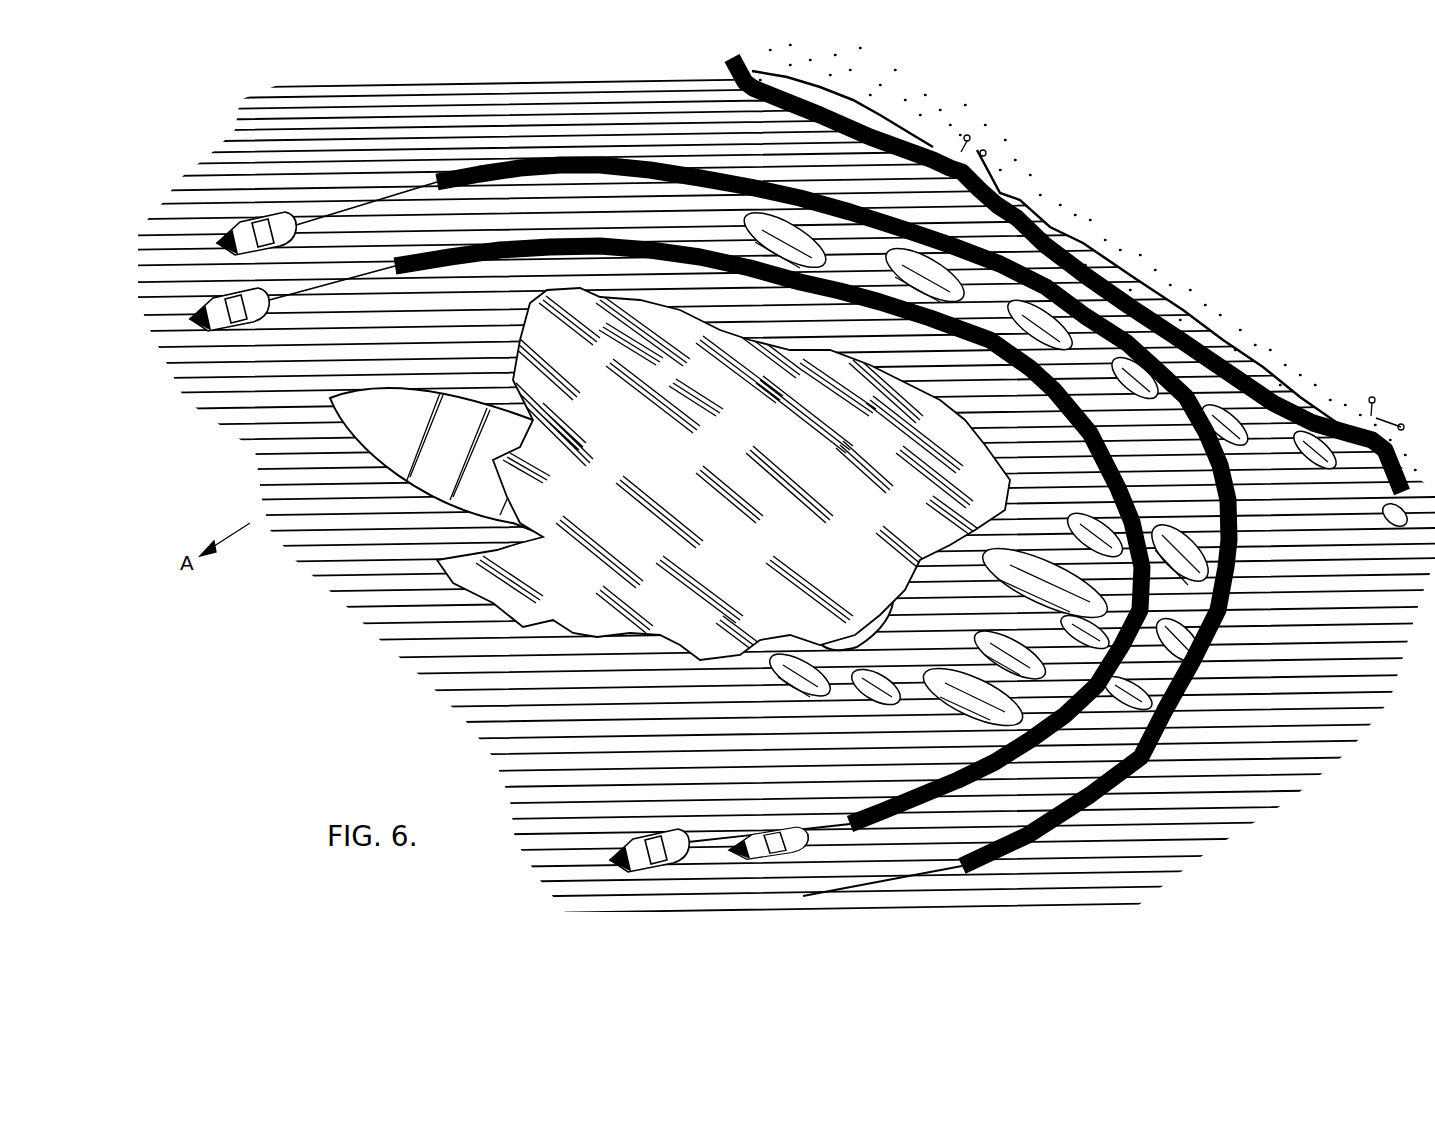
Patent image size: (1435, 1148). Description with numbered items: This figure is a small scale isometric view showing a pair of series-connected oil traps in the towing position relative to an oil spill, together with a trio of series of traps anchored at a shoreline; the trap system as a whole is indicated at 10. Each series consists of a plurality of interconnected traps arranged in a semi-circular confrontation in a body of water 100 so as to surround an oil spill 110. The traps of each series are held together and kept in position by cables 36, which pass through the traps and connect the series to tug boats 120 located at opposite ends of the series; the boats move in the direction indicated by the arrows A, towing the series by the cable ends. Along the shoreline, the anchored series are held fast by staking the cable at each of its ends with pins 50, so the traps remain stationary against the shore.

The oil boom system 10 is at (1212, 316).
The cable 36 is at (1376, 418).
The pin 50 is at (985, 150).
The body of water 100 is at (1290, 772).
The oil spill 110 is at (831, 437).
The tug boat 120 is at (610, 842).